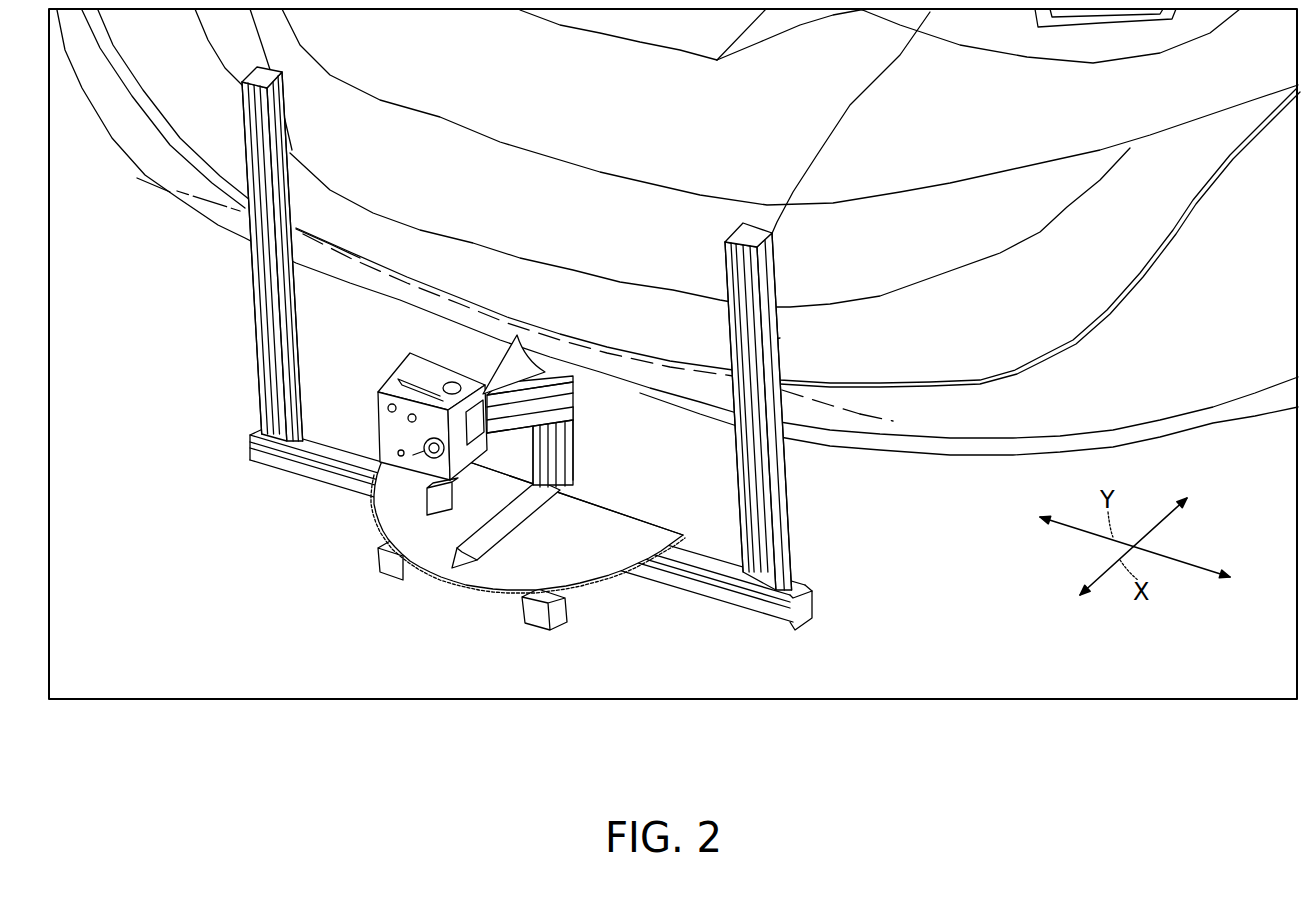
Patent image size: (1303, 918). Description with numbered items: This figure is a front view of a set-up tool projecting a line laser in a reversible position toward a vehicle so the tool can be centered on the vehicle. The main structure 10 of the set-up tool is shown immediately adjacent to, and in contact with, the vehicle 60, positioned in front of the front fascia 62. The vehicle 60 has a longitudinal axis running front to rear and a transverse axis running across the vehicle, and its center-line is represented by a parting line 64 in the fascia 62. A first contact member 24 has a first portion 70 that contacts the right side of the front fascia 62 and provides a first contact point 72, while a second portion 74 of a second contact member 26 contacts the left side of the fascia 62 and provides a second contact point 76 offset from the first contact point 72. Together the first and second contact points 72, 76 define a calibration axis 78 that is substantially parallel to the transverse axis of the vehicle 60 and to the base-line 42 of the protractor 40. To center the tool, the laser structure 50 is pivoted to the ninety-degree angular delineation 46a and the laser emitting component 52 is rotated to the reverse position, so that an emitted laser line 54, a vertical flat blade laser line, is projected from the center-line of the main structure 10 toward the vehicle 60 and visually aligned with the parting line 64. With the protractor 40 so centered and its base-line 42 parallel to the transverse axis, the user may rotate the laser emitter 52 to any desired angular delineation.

The main structure 10 is at (216, 450).
The first contact member 24 is at (237, 347).
The second contact member 26 is at (798, 531).
The protractor 40 is at (503, 566).
The base-line 42 is at (630, 520).
The 90° angular delineation 46a is at (431, 592).
The laser structure 50 is at (514, 512).
The laser emitting component 52 is at (429, 464).
The emitted laser line 54 is at (506, 366).
The vehicle 60 is at (949, 114).
The front fascia 62 is at (533, 219).
The parting line 64 is at (533, 288).
The first portion 70 is at (234, 223).
The first contact point 72 is at (309, 227).
The second portion 74 is at (772, 339).
The second contact point 76 is at (800, 384).
The calibration axis 78 is at (890, 420).